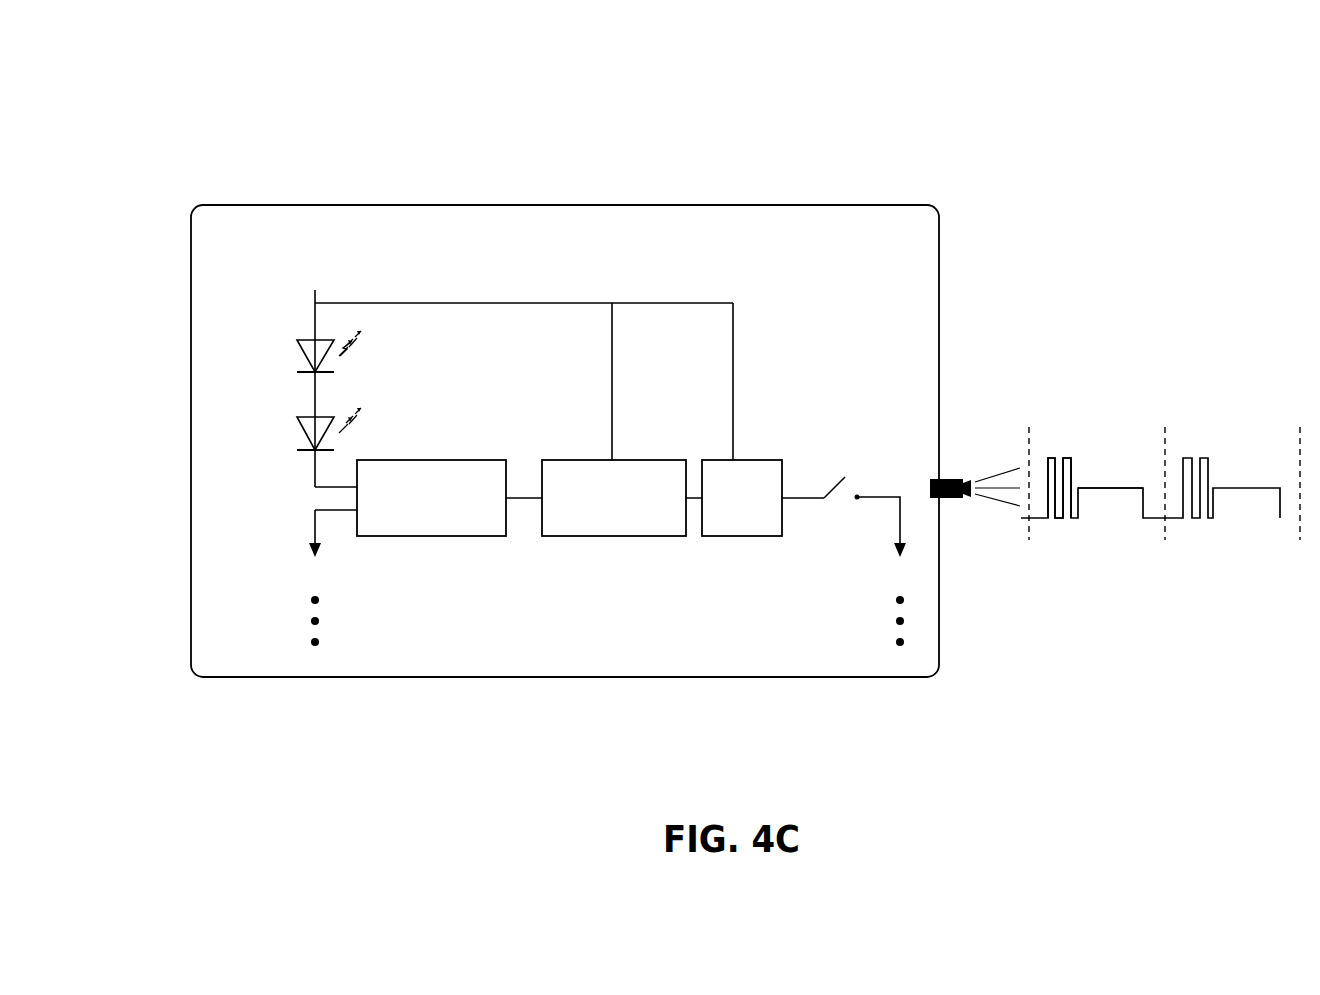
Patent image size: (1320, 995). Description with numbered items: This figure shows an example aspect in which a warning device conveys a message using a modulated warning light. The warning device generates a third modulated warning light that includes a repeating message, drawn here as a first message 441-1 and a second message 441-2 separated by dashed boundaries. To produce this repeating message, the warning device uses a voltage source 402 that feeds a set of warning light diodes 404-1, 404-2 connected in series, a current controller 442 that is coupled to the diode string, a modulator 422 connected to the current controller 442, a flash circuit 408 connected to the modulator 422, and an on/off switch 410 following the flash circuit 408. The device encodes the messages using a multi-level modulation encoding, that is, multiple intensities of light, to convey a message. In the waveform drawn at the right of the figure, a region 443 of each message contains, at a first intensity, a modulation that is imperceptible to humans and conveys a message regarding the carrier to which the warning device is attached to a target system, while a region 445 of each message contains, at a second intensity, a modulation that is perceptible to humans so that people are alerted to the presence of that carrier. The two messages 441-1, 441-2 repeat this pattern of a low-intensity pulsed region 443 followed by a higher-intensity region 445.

The voltage source 402 is at (290, 268).
The warning light diode 404-1 is at (290, 355).
The warning light diode 404-2 is at (290, 431).
The current controller 442 is at (438, 537).
The modulator 422 is at (612, 537).
The flash circuit 408 is at (742, 537).
The on/off switch 410 is at (847, 444).
The first message 441-1 is at (1093, 480).
The second message 441-2 is at (1232, 480).
The region 443 is at (1052, 528).
The region 445 is at (1113, 496).